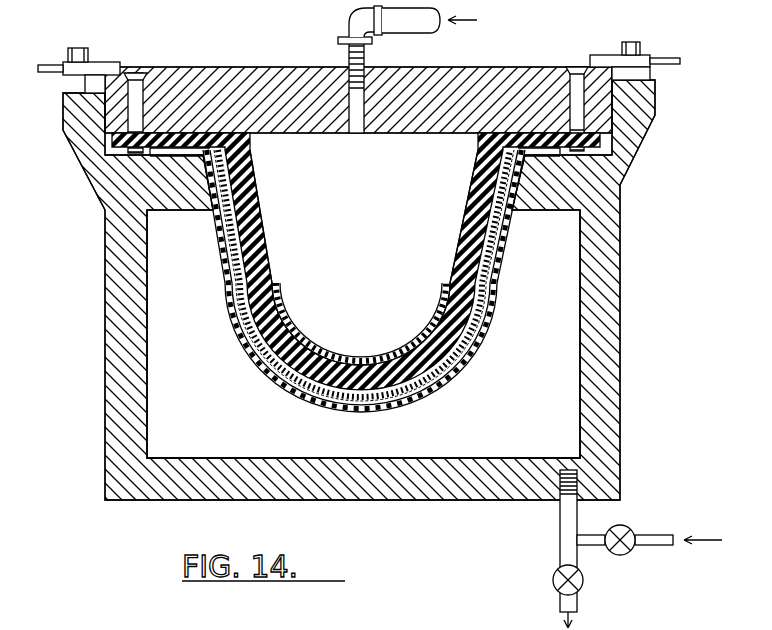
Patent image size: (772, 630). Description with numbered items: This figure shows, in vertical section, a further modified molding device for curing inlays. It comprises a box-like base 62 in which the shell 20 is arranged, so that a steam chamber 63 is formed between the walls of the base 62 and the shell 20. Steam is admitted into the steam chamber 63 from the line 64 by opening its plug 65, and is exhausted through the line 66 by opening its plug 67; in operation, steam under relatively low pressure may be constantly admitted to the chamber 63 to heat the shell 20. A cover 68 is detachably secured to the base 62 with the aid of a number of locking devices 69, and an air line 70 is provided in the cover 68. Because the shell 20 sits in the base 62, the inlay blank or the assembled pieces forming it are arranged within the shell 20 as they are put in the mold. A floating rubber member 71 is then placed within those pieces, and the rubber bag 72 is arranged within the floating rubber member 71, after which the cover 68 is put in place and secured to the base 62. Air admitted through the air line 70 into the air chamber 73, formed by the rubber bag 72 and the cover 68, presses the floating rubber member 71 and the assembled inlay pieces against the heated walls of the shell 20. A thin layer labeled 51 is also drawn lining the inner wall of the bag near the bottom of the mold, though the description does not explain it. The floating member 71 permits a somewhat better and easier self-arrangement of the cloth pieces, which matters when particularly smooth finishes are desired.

The shell 20 is at (240, 360).
The inner liner 51 is at (448, 322).
The base 62 is at (605, 275).
The steam chamber 63 is at (562, 335).
The line 64 is at (668, 532).
The plug 65 is at (622, 526).
The line 66 is at (576, 603).
The plug 67 is at (583, 580).
The cover 68 is at (298, 67).
The locking devices 69 is at (75, 80).
The air line 70 is at (432, 30).
The floating rubber member 71 is at (480, 350).
The rubber bag 72 is at (265, 258).
The air chamber 73 is at (396, 207).